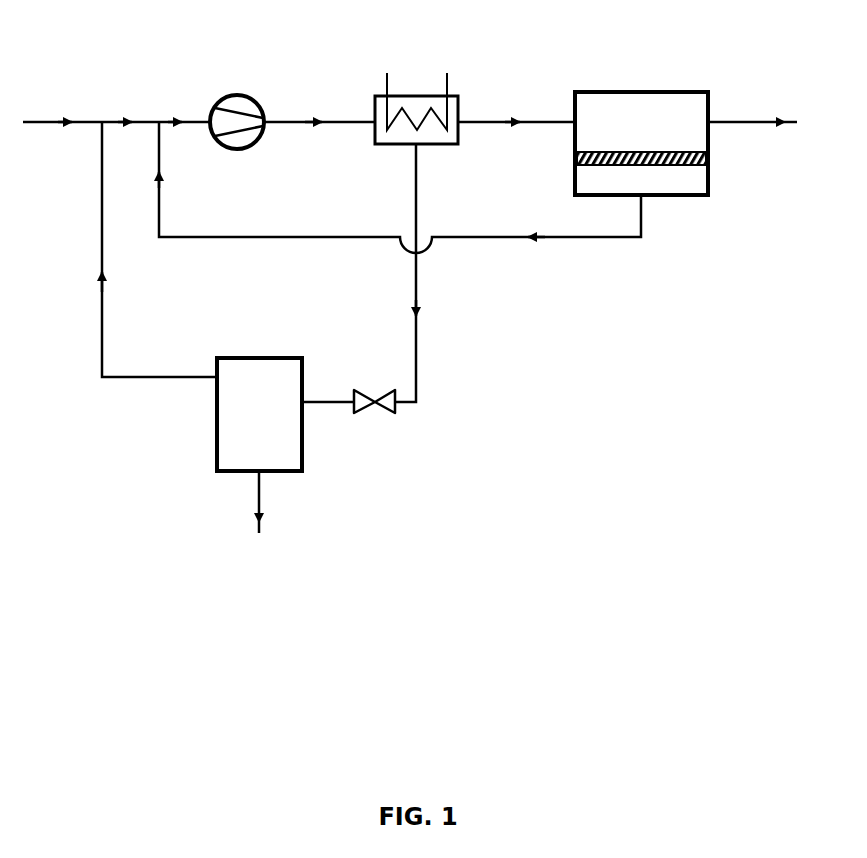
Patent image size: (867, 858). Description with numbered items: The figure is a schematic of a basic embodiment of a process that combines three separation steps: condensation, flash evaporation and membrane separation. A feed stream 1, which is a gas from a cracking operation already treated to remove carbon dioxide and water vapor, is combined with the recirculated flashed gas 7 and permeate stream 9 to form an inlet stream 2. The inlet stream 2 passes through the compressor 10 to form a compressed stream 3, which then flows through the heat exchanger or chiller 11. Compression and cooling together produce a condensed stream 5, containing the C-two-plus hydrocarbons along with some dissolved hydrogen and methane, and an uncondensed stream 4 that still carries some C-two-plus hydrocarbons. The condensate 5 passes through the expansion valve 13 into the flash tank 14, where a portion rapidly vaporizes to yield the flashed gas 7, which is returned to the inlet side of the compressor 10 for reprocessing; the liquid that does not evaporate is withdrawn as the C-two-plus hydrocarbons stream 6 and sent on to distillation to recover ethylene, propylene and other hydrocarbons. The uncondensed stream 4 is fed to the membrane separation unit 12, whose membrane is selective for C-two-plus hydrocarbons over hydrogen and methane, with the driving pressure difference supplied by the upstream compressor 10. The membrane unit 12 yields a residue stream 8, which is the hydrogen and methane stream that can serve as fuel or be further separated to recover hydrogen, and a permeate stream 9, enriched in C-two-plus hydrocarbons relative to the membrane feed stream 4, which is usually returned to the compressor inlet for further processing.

The feed stream 1 is at (62, 105).
The inlet stream 2 is at (155, 105).
The compressed stream 3 is at (319, 105).
The uncondensed stream 4 is at (516, 105).
The condensed stream 5 is at (422, 273).
The C2+ hydrocarbons stream 6 is at (258, 519).
The flashed gas 7 is at (142, 249).
The residue stream 8 is at (768, 124).
The permeate stream 9 is at (400, 201).
The compressor 10 is at (243, 96).
The heat exchanger 11 is at (456, 96).
The membrane separation unit 12 is at (696, 92).
The expansion valve 13 is at (378, 412).
The flash tank 14 is at (215, 458).